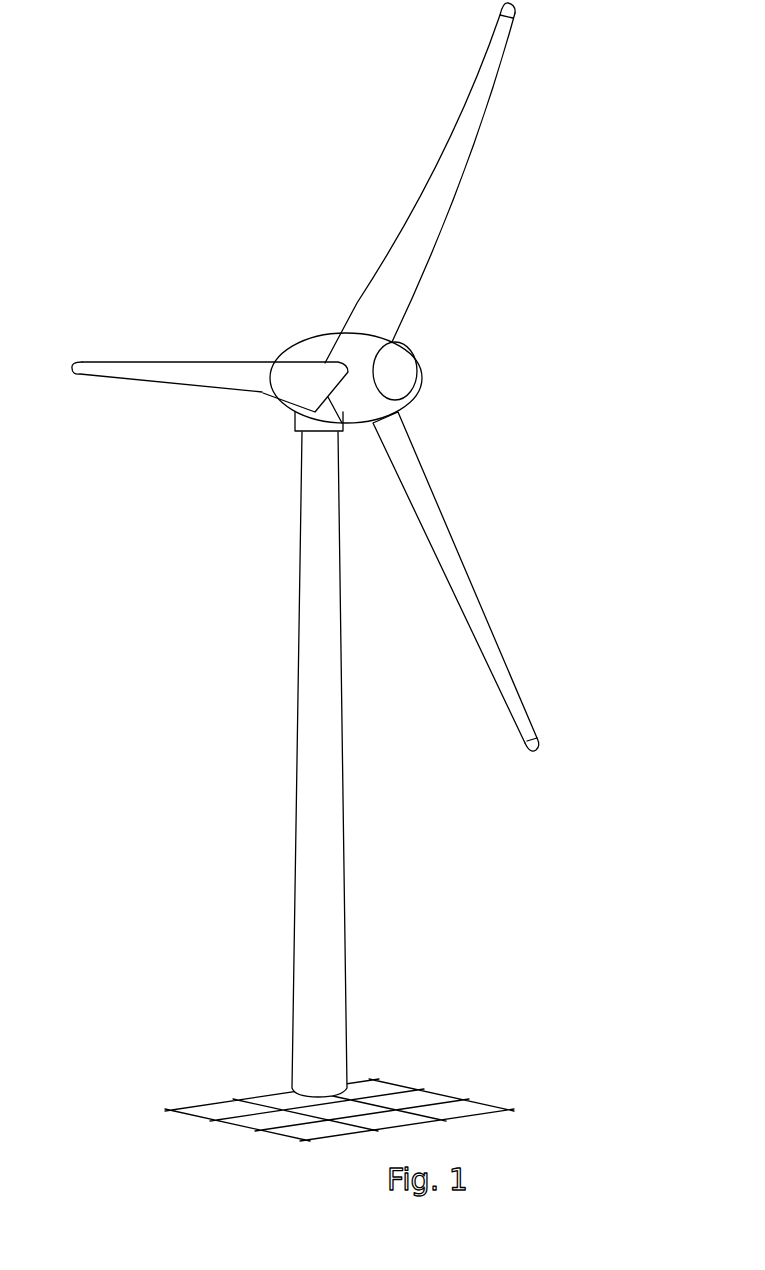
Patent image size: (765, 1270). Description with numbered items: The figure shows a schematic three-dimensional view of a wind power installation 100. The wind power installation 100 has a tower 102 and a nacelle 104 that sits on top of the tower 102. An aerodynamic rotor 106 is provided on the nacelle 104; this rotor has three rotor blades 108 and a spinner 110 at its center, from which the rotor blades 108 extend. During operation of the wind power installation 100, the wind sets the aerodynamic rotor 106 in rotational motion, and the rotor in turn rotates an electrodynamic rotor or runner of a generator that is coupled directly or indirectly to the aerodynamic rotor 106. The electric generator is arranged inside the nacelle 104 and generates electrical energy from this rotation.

The wind power installation 100 is at (348, 572).
The tower 102 is at (332, 840).
The nacelle 104 is at (318, 352).
The aerodynamic rotor 106 is at (348, 377).
The rotor blades 108 is at (156, 367).
The spinner 110 is at (402, 372).